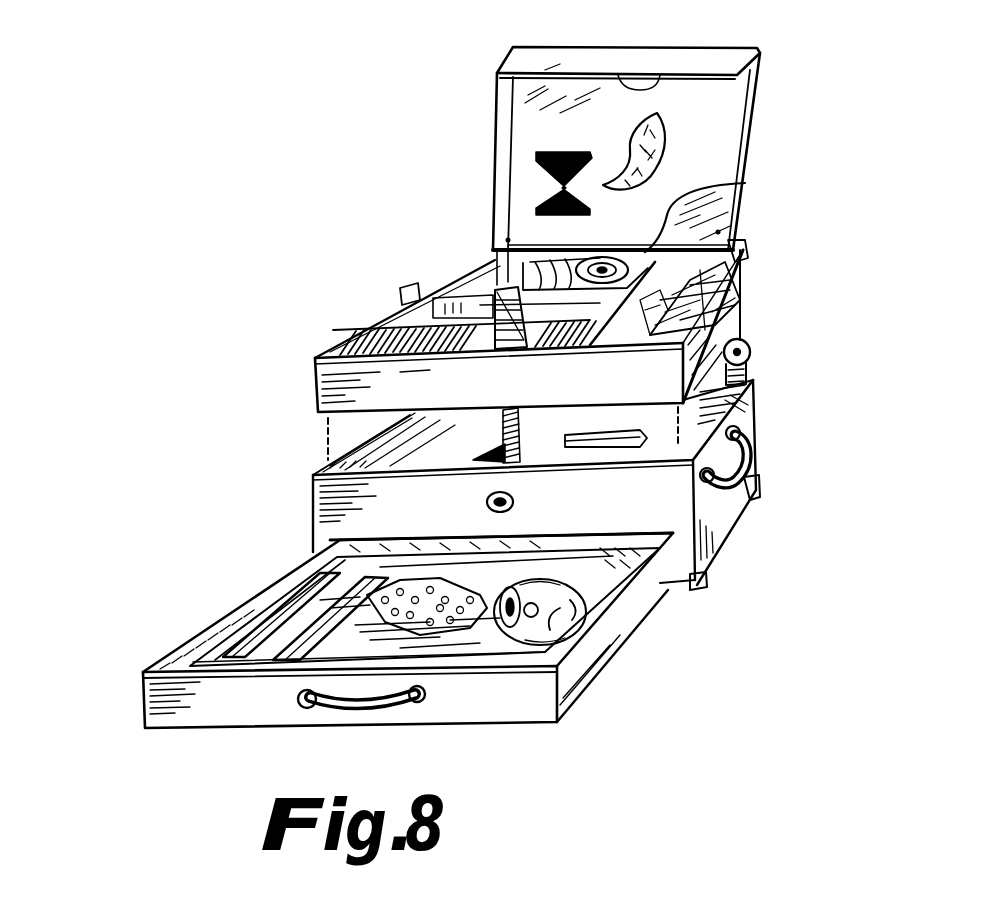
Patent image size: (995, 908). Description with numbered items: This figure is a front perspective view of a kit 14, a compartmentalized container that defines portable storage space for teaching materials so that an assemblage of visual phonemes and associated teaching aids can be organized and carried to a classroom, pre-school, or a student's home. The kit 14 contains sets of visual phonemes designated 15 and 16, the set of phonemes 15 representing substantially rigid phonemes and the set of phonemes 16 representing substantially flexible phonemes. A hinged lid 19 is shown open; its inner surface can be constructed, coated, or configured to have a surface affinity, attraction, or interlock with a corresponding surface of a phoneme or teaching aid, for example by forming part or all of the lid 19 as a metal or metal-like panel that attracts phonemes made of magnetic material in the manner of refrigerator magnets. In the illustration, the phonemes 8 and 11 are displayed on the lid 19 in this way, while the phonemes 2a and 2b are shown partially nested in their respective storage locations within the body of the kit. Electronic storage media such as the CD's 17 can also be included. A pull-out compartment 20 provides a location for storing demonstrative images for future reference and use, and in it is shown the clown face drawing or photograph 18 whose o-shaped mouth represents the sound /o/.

The kit 14 is at (193, 750).
The lid 19 is at (760, 73).
The phoneme 8 is at (537, 152).
The phoneme 11 is at (667, 150).
The CD's 17 is at (745, 183).
The set of visual phonemes 15 is at (383, 322).
The phoneme 2a is at (482, 298).
The phoneme 2b is at (738, 300).
The set of visual phonemes 16 is at (730, 240).
The compartment 20 is at (237, 640).
The clown face drawing or photograph 18 is at (605, 553).